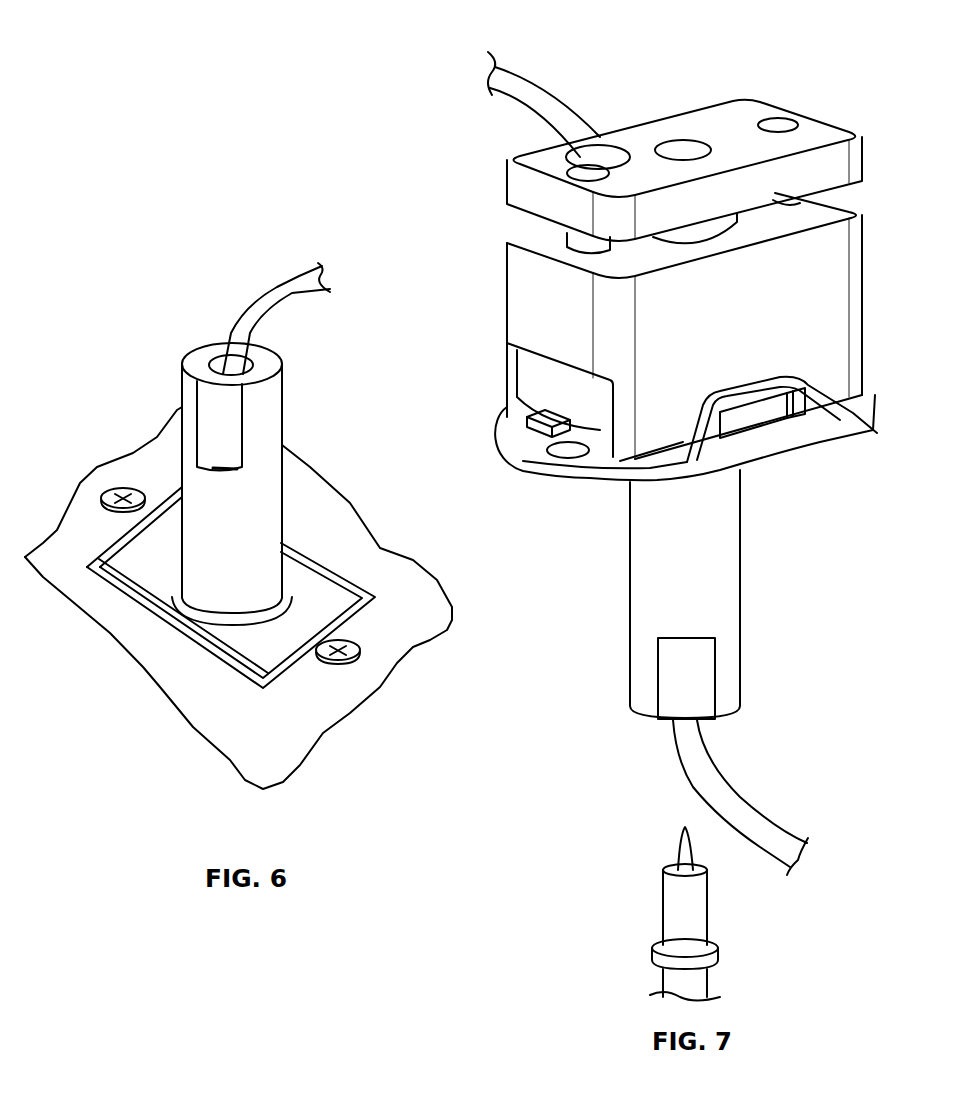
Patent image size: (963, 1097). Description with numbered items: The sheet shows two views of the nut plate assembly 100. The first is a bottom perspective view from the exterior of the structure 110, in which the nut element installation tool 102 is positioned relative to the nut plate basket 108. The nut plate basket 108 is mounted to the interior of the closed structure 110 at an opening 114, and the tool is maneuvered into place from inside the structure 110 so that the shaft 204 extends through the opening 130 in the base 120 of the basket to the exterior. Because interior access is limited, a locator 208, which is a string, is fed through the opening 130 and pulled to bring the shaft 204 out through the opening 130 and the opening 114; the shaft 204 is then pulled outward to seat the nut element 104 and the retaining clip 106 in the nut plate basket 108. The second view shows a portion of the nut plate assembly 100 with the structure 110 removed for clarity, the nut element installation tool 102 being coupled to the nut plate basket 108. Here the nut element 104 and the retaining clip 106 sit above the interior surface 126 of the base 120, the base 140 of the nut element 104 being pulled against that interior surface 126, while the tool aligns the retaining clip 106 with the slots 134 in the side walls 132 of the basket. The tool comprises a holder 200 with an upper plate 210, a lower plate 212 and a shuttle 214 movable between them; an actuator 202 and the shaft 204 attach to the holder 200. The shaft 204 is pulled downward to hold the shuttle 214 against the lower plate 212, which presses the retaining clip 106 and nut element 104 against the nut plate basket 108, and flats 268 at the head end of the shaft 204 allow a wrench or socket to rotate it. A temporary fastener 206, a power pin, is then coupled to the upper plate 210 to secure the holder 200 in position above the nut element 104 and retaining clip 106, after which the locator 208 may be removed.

In FIG. 7, the nut plate assembly 100 is at (735, 76).
In FIG. 6, the nut element installation tool 102 is at (207, 438).
In FIG. 7, the nut element installation tool 102 is at (462, 260).
In FIG. 7, the nut element 104 is at (530, 414).
In FIG. 7, the retaining clip 106 is at (512, 458).
In FIG. 6, the nut plate basket 108 is at (270, 657).
In FIG. 7, the nut plate basket 108 is at (687, 446).
In FIG. 6, the structure 110 is at (198, 693).
In FIG. 6, the opening 114 is at (320, 548).
In FIG. 7, the base 120 is at (590, 462).
In FIG. 7, the interior surface 126 is at (523, 448).
In FIG. 6, the opening 130 is at (207, 627).
In FIG. 7, the side walls 132 is at (817, 408).
In FIG. 7, the slots 134 is at (807, 398).
In FIG. 7, the base 140 is at (530, 377).
In FIG. 7, the holder 200 is at (629, 326).
In FIG. 7, the actuator 202 is at (518, 78).
In FIG. 6, the shaft 204 is at (205, 480).
In FIG. 7, the shaft 204 is at (653, 591).
In FIG. 7, the temporary fastener 206 is at (694, 902).
In FIG. 6, the locator 208 is at (265, 300).
In FIG. 7, the locator 208 is at (730, 822).
In FIG. 7, the upper plate 210 is at (525, 190).
In FIG. 7, the lower plate 212 is at (530, 375).
In FIG. 7, the shuttle 214 is at (523, 268).
In FIG. 7, the flats 268 is at (690, 663).